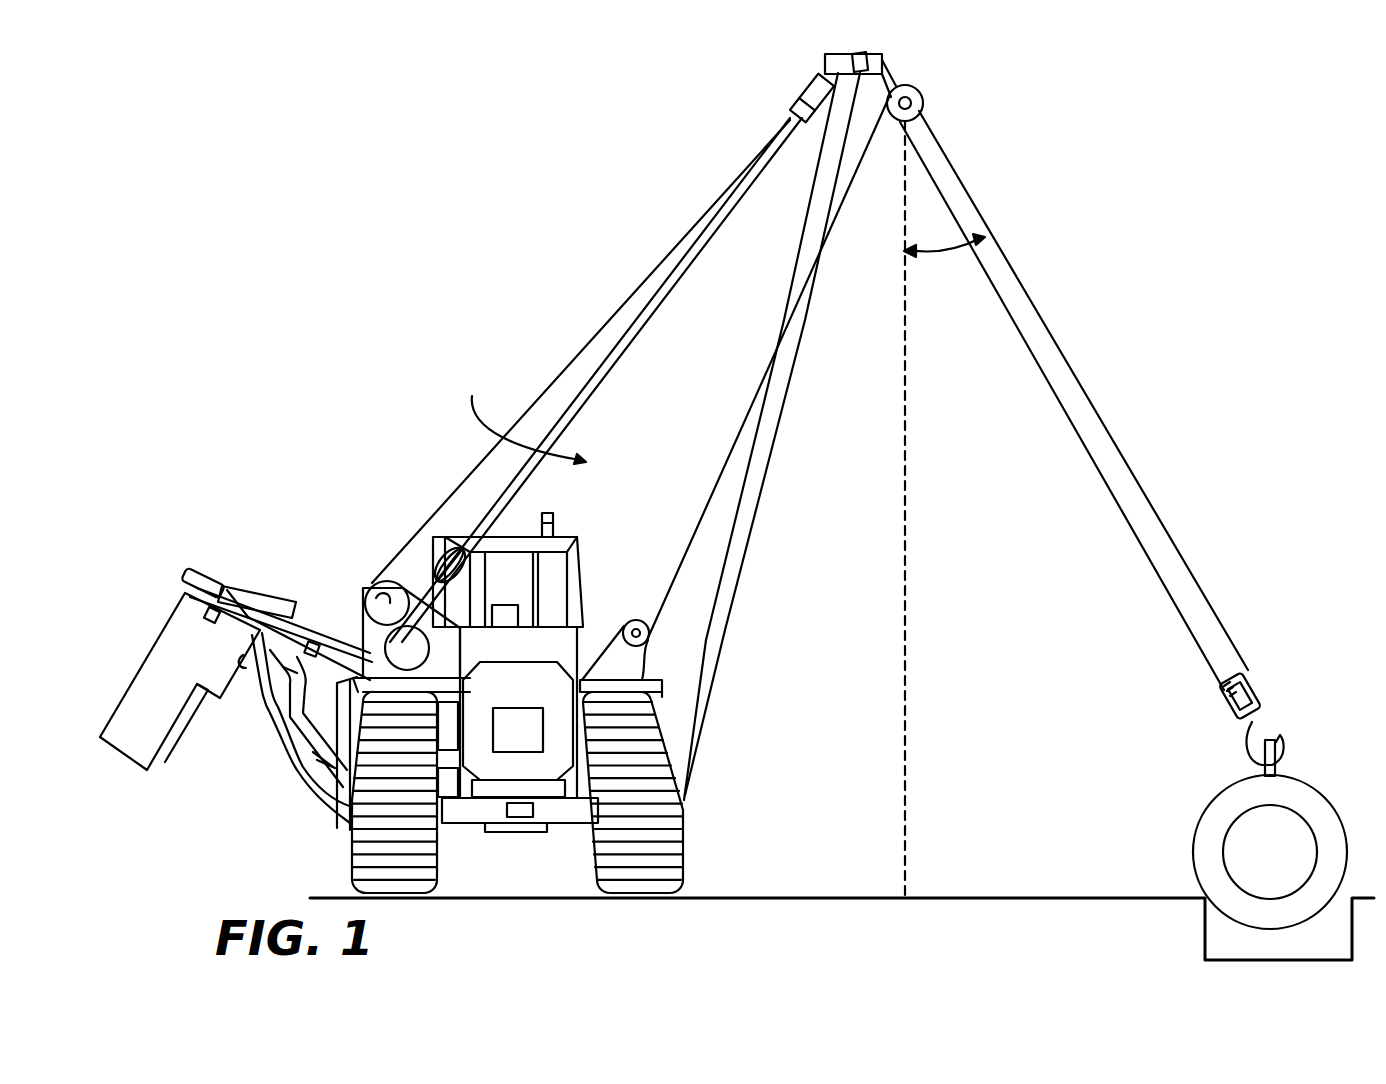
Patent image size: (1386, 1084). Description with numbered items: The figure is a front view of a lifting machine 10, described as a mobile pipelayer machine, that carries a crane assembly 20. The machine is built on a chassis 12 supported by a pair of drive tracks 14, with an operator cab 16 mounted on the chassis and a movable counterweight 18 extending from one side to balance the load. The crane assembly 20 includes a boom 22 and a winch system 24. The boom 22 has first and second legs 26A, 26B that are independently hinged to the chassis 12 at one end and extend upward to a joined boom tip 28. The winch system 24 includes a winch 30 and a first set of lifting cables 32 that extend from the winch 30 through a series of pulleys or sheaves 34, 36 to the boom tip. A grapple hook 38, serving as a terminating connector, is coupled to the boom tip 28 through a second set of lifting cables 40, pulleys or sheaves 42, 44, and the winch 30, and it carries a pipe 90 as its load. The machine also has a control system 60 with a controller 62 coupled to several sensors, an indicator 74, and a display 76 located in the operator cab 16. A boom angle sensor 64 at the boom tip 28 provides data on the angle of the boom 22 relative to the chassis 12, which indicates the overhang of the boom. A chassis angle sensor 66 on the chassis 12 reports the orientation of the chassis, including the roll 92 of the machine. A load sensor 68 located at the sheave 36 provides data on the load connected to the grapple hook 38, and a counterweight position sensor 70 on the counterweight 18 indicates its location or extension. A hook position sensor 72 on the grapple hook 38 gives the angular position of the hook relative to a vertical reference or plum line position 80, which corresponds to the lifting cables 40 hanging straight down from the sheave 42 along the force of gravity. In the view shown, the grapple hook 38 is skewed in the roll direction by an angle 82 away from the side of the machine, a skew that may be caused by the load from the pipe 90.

The lifting machine 10 is at (468, 300).
The chassis 12 is at (458, 810).
The drive tracks 14 is at (348, 858).
The operator cab 16 is at (506, 565).
The movable counterweight 18 is at (160, 677).
The crane assembly 20 is at (931, 418).
The boom 22 is at (790, 378).
The winch system 24 is at (350, 528).
The first leg 26A is at (720, 628).
The second leg 26B is at (714, 690).
The boom tip 28 is at (826, 74).
The winch 30 is at (378, 586).
The first set of lifting cables 32 is at (642, 322).
The pulley or sheave 34 is at (793, 110).
The pulley or sheave 36 is at (440, 560).
The grapple hook 38 is at (1282, 740).
The second set of lifting cables 40 is at (684, 570).
The pulley or sheave 42 is at (925, 103).
The pulley or sheave 44 is at (628, 620).
The control system 60 is at (510, 708).
The controller 62 is at (516, 707).
The boom angle sensor 64 is at (872, 66).
The chassis angle sensor 66 is at (520, 818).
The load sensor 68 is at (445, 560).
The counterweight position sensor 70 is at (190, 598).
The hook position sensor 72 is at (1258, 700).
The indicator 74 is at (556, 520).
The display 76 is at (514, 620).
The plum line position 80 is at (908, 312).
The angle 82 is at (940, 238).
The pipe 90 is at (1196, 816).
The roll 92 is at (523, 416).